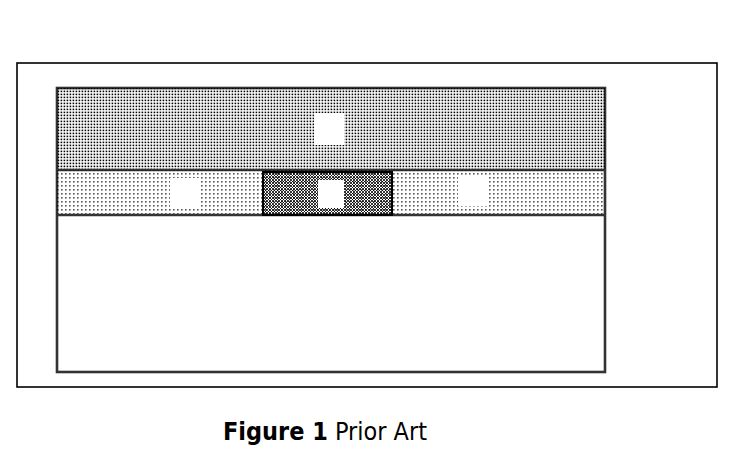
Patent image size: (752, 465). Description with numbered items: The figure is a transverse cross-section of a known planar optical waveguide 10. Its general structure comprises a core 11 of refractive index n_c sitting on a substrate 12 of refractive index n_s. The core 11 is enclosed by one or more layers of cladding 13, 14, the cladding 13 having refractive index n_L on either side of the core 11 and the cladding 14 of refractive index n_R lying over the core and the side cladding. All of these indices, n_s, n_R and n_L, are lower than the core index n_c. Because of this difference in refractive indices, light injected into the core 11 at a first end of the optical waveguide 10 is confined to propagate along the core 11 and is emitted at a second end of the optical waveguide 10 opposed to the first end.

The planar optical waveguide 10 is at (520, 54).
The core 11 is at (353, 206).
The substrate 12 is at (492, 362).
The cladding 13 is at (595, 193).
The cladding 14 is at (595, 138).